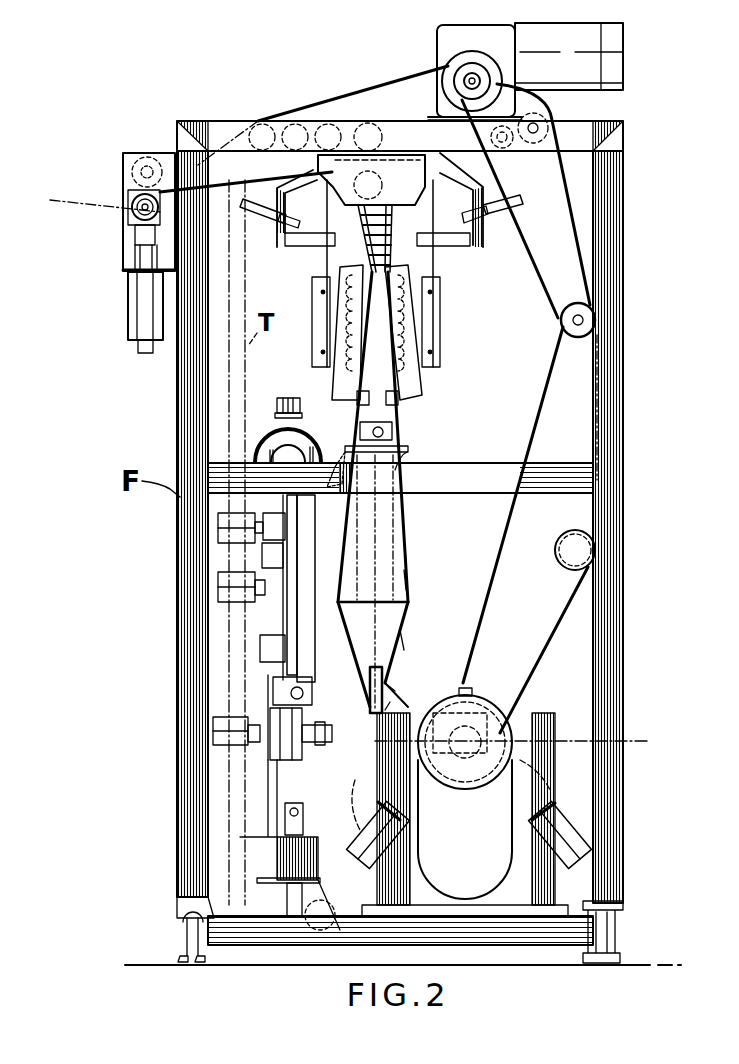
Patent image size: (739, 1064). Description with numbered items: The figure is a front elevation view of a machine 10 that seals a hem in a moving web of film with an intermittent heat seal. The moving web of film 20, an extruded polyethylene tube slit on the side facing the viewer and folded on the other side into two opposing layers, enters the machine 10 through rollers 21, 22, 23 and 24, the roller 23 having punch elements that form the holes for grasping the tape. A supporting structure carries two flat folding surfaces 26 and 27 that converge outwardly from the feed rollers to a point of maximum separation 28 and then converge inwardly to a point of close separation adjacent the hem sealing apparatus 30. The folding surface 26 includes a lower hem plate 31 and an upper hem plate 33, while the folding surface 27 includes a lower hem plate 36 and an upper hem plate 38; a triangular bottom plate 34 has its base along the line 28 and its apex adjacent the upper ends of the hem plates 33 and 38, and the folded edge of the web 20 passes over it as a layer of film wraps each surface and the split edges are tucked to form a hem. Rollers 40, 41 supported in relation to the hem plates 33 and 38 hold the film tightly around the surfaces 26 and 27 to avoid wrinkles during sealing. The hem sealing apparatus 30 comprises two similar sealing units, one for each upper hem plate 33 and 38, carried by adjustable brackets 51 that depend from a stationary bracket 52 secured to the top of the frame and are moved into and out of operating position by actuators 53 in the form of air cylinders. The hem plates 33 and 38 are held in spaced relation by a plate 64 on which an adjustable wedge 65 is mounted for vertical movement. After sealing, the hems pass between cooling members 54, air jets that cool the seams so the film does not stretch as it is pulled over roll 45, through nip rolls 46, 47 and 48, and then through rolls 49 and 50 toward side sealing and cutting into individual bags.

The machine 10 is at (128, 651).
The moving web of film 20 is at (493, 799).
The roller 21 is at (548, 764).
The roller 22 is at (472, 786).
The roller 23 is at (428, 786).
The roller 24 is at (401, 698).
The folding surface 26 is at (365, 675).
The folding surface 27 is at (392, 677).
The point of maximum separation 28 is at (404, 577).
The hem sealing apparatus 30 is at (383, 377).
The lower hem plate 31 is at (365, 690).
The upper hem plate 33 is at (344, 553).
The bottom plate 34 is at (406, 549).
The lower hem plate 36 is at (399, 645).
The upper hem plate 38 is at (406, 527).
The roller 40 is at (358, 401).
The roller 41 is at (409, 403).
The roll 45 is at (376, 185).
The nip roll 46 is at (328, 128).
The nip roll 47 is at (295, 128).
The nip roll 48 is at (258, 128).
The roll 49 is at (143, 158).
The roll 50 is at (130, 207).
The adjustable bracket 51 is at (312, 269).
The stationary bracket 52 is at (430, 163).
The actuator 53 is at (245, 221).
The cooling member 54 is at (405, 256).
The plate 64 is at (401, 433).
The adjustable wedge 65 is at (338, 375).